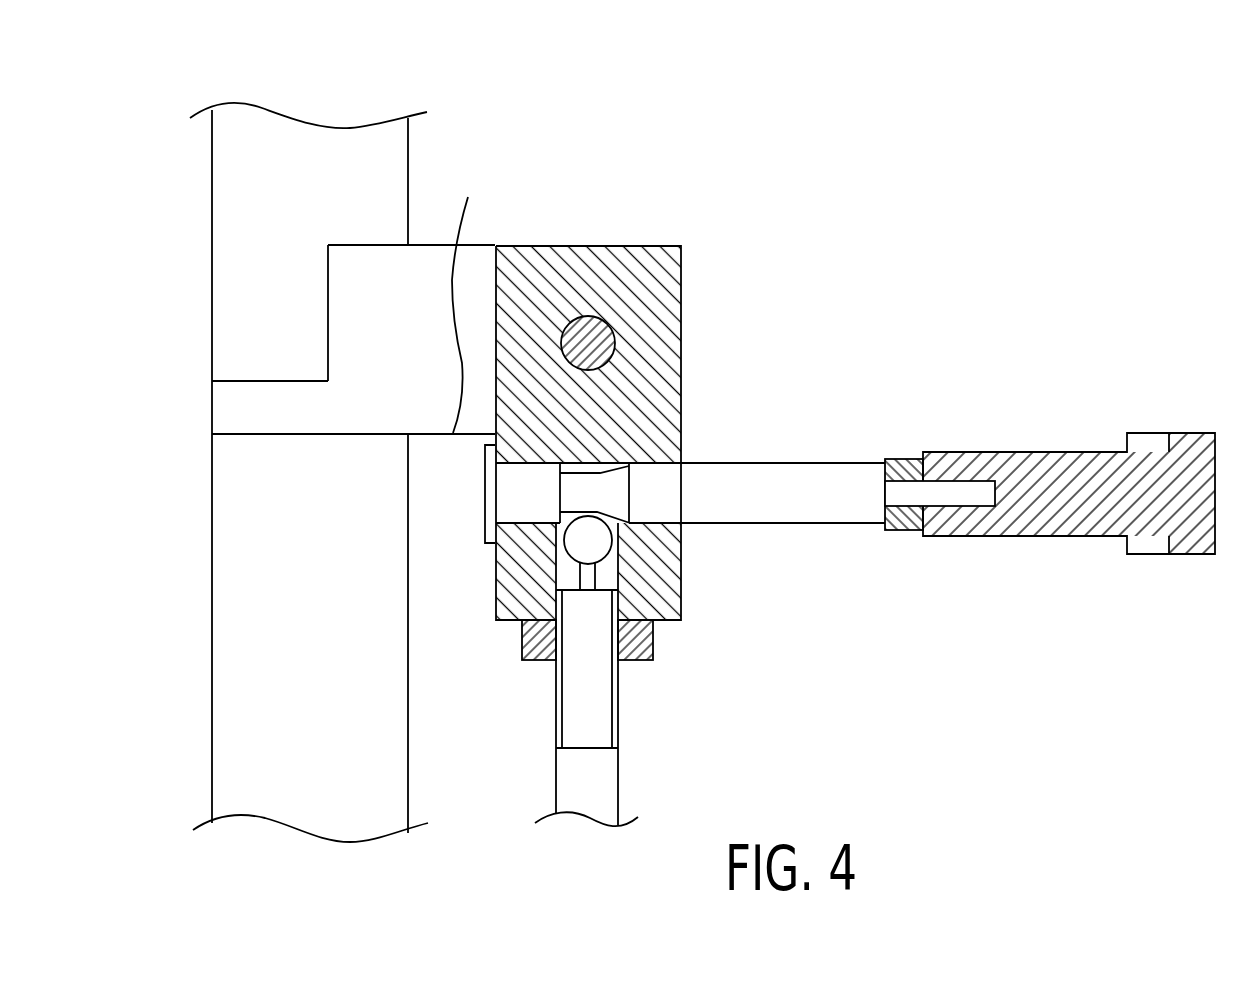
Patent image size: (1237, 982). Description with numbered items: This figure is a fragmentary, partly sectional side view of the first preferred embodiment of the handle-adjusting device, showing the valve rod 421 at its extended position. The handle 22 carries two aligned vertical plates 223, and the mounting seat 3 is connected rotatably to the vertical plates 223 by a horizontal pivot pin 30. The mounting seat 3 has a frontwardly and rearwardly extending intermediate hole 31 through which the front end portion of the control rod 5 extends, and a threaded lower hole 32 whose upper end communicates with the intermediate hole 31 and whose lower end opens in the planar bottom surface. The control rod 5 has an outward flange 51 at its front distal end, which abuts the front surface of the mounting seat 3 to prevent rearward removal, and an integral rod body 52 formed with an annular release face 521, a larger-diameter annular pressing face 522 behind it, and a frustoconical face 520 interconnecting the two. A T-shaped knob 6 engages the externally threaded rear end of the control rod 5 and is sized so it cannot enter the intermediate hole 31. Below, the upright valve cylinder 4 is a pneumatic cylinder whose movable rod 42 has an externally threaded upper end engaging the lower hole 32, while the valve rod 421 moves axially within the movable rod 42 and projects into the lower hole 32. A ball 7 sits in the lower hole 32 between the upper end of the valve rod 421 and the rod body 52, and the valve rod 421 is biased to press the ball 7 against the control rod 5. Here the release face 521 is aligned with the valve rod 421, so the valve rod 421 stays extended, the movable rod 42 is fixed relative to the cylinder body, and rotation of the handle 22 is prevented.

The handle 22 is at (295, 155).
The vertical plates 223 is at (350, 273).
The mounting seat 3 is at (657, 252).
The horizontal pivot pin 30 is at (588, 328).
The intermediate hole 31 is at (578, 468).
The control rod 5 is at (782, 455).
The outward flange 51 is at (490, 483).
The rod body 52 is at (797, 527).
The frustoconical face 520 is at (608, 512).
The annular release face 521 is at (585, 503).
The annular pressing face 522 is at (642, 517).
The T-shaped knob 6 is at (1025, 523).
The ball 7 is at (587, 537).
The threaded lower hole 32 is at (568, 570).
The upright valve cylinder 4 is at (573, 830).
The movable rod 42 is at (572, 775).
The valve rod 421 is at (585, 580).